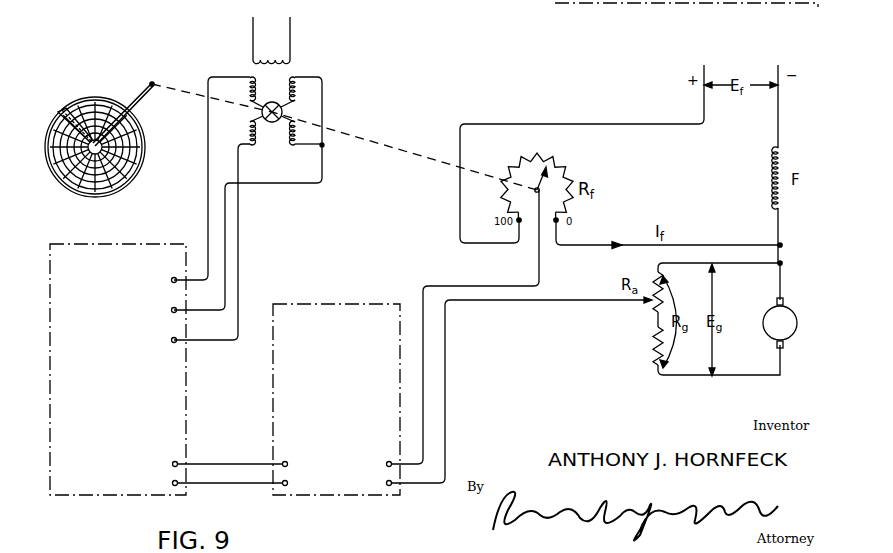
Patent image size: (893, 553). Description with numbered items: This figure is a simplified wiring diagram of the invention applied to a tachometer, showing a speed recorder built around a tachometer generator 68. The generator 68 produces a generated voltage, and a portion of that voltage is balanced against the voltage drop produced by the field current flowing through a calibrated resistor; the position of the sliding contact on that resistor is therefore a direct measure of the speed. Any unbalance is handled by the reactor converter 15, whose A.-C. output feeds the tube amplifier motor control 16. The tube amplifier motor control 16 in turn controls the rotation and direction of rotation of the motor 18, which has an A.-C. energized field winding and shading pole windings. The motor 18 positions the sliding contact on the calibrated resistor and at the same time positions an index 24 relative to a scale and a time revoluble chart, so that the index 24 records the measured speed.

The index 24 is at (150, 83).
The motor 18 is at (328, 65).
The tube amplifier motor control 16 is at (114, 244).
The reactor converter 15 is at (328, 304).
The tachometer generator 68 is at (797, 318).